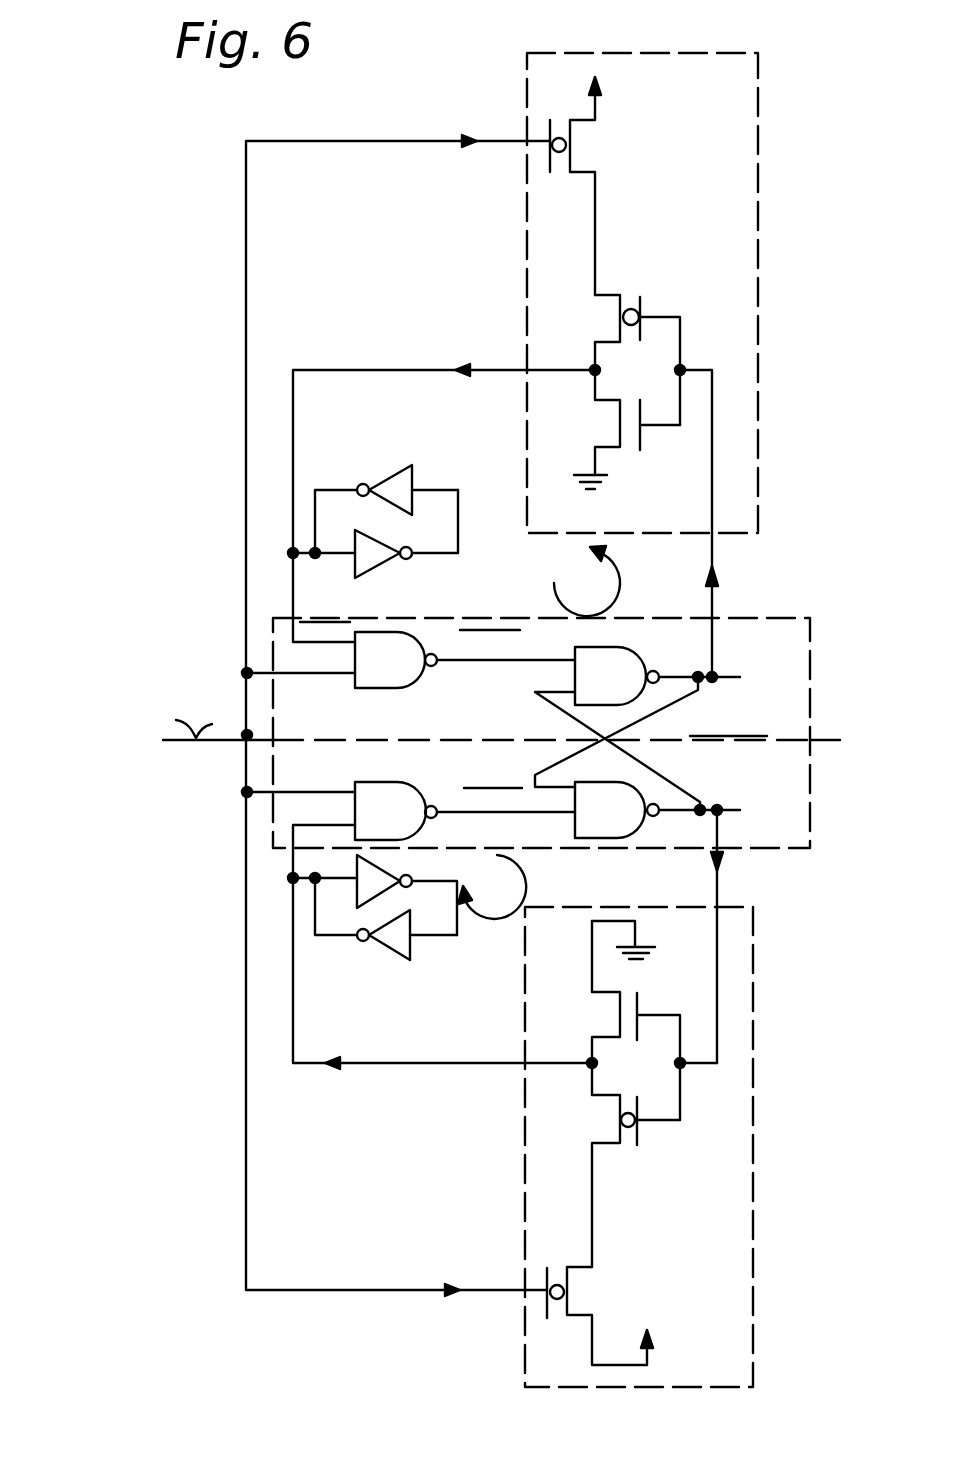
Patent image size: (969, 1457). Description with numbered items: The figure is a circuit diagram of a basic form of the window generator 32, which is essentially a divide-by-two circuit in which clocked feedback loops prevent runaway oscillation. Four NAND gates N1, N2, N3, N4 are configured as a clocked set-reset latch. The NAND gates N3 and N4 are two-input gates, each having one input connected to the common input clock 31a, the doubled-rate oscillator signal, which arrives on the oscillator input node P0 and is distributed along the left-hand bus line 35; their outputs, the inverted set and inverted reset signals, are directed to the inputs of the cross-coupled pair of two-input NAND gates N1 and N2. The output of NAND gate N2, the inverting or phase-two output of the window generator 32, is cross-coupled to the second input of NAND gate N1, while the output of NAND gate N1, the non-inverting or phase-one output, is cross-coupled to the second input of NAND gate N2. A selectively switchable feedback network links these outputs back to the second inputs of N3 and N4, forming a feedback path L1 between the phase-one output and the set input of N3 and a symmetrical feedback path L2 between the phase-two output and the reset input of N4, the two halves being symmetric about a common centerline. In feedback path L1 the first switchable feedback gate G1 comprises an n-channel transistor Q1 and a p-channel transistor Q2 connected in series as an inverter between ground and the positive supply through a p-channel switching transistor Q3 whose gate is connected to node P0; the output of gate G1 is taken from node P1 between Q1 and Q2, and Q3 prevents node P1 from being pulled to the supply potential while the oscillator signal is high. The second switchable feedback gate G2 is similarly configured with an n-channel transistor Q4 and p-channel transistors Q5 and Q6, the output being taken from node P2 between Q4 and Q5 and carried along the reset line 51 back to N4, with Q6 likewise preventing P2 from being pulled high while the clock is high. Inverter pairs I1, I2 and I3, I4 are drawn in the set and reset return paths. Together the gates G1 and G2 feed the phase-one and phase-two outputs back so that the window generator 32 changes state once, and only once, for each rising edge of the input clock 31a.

The window generator 32 is at (132, 270).
The input signal line from bus 35 is at (385, 140).
The input clock 31a is at (214, 660).
The reset (RST) signal line 51 is at (498, 1060).
The first switchable feedback gate G1 is at (758, 236).
The second switchable feedback gate G2 is at (753, 1109).
The n-channel transistor Q1 is at (618, 429).
The p-channel transistor Q2 is at (618, 352).
The p-channel switching transistor Q3 is at (590, 186).
The n-channel transistor Q4 is at (620, 1020).
The p-channel transistor Q5 is at (620, 1165).
The p-channel switching transistor Q6 is at (600, 1316).
The NAND gate N1 is at (620, 662).
The NAND gate N2 is at (630, 832).
The NAND gate N3 is at (400, 686).
The NAND gate N4 is at (433, 775).
The inverter I1 is at (420, 478).
The inverter I2 is at (346, 580).
The inverter I3 is at (356, 882).
The inverter I4 is at (412, 960).
The 2x VCO input node P0 is at (247, 740).
The output node of gate G1 P1 is at (566, 350).
The output node of gate G2 P2 is at (550, 1064).
The feedback path L1 is at (587, 581).
The feedback path L2 is at (492, 887).